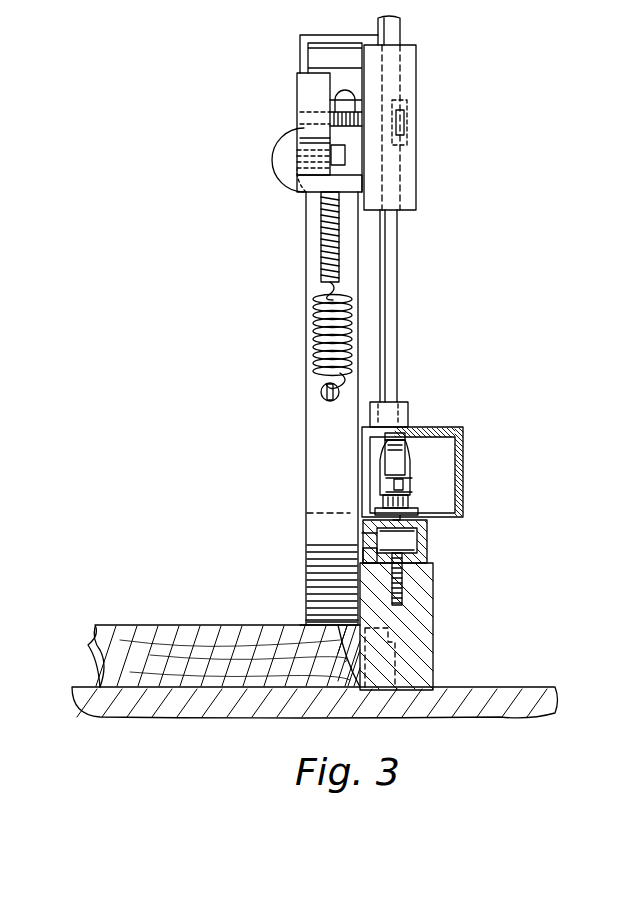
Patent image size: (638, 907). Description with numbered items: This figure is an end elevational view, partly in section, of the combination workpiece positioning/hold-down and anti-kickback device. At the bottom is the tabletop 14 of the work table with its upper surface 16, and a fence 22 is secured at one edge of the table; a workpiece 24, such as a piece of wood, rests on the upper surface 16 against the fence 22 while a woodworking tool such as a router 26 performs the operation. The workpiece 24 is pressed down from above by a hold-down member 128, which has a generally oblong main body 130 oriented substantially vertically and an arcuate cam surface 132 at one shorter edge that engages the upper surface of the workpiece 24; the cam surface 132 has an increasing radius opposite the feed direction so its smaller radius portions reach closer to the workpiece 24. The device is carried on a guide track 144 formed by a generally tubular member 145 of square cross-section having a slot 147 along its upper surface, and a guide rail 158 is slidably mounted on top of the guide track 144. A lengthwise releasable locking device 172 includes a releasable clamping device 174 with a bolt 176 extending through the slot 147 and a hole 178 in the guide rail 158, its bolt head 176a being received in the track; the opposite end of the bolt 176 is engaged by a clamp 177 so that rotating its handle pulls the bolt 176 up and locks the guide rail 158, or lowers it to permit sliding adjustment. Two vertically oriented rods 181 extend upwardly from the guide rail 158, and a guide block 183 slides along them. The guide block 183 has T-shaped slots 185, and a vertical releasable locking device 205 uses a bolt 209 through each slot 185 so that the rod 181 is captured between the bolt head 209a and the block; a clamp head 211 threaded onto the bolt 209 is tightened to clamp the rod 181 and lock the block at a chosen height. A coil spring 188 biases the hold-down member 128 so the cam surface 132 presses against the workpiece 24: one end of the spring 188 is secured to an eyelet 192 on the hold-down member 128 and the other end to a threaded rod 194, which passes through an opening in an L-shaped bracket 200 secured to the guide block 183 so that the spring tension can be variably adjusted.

The tabletop 14 is at (195, 705).
The upper surface 16 is at (90, 687).
The fence 22 is at (433, 668).
The workpiece 24 is at (158, 635).
The router 26 is at (392, 662).
The hold-down member 128 is at (305, 503).
The main body 130 is at (312, 533).
The arcuate cam surface 132 is at (295, 633).
The guide track 144 is at (432, 553).
The tubular member 145 is at (427, 562).
The slot 147 is at (428, 530).
The guide rail 158 is at (462, 470).
The lengthwise releasable locking device 172 is at (422, 442).
The releasable clamping device 174 is at (380, 456).
The bolt 176 is at (420, 498).
The bolt head 176a is at (362, 555).
The clamp 177 is at (410, 467).
The hole 178 is at (365, 533).
The vertically oriented rods 181 is at (398, 240).
The guide block 183 is at (418, 88).
The T-shaped slots 185 is at (416, 143).
The coil spring 188 is at (313, 328).
The eyelet 192 is at (322, 400).
The threaded rod 194 is at (321, 235).
The L-shaped bracket 200 is at (290, 143).
The vertical releasable locking device 205 is at (287, 84).
The bolt 209 is at (390, 90).
The bolt head 209a is at (418, 118).
The clamp head 211 is at (303, 145).